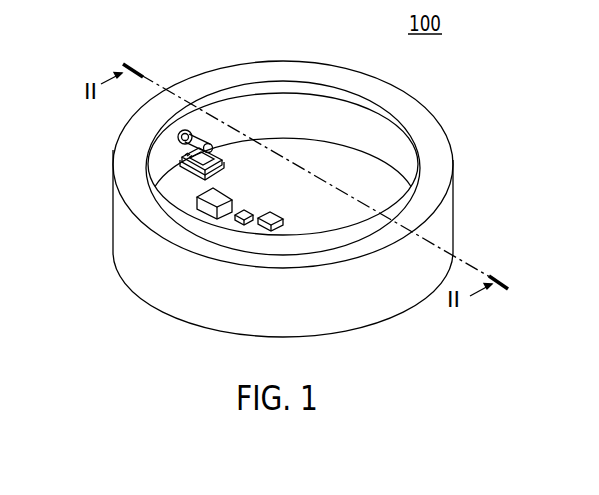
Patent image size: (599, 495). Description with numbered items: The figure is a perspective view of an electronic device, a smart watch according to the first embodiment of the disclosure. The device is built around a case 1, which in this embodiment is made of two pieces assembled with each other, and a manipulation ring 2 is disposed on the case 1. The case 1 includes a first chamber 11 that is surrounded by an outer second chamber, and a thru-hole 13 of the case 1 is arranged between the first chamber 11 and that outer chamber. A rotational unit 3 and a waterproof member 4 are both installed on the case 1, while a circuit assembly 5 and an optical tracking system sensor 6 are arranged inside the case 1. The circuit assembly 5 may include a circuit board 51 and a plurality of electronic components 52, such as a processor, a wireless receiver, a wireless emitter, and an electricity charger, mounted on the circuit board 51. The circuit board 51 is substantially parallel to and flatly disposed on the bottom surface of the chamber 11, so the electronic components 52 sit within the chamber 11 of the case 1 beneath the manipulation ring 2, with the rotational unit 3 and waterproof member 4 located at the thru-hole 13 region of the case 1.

The case 1 is at (454, 217).
The manipulation ring 2 is at (430, 110).
The first chamber 11 is at (284, 136).
The rotational unit 3 is at (201, 132).
The thru-hole 13 is at (176, 133).
The waterproof member 4 is at (178, 146).
The optical tracking system (OTS) sensor 6 is at (184, 173).
The circuit assembly 5 is at (76, 207).
The circuit board 51 is at (207, 198).
The electronic components 52 is at (264, 230).